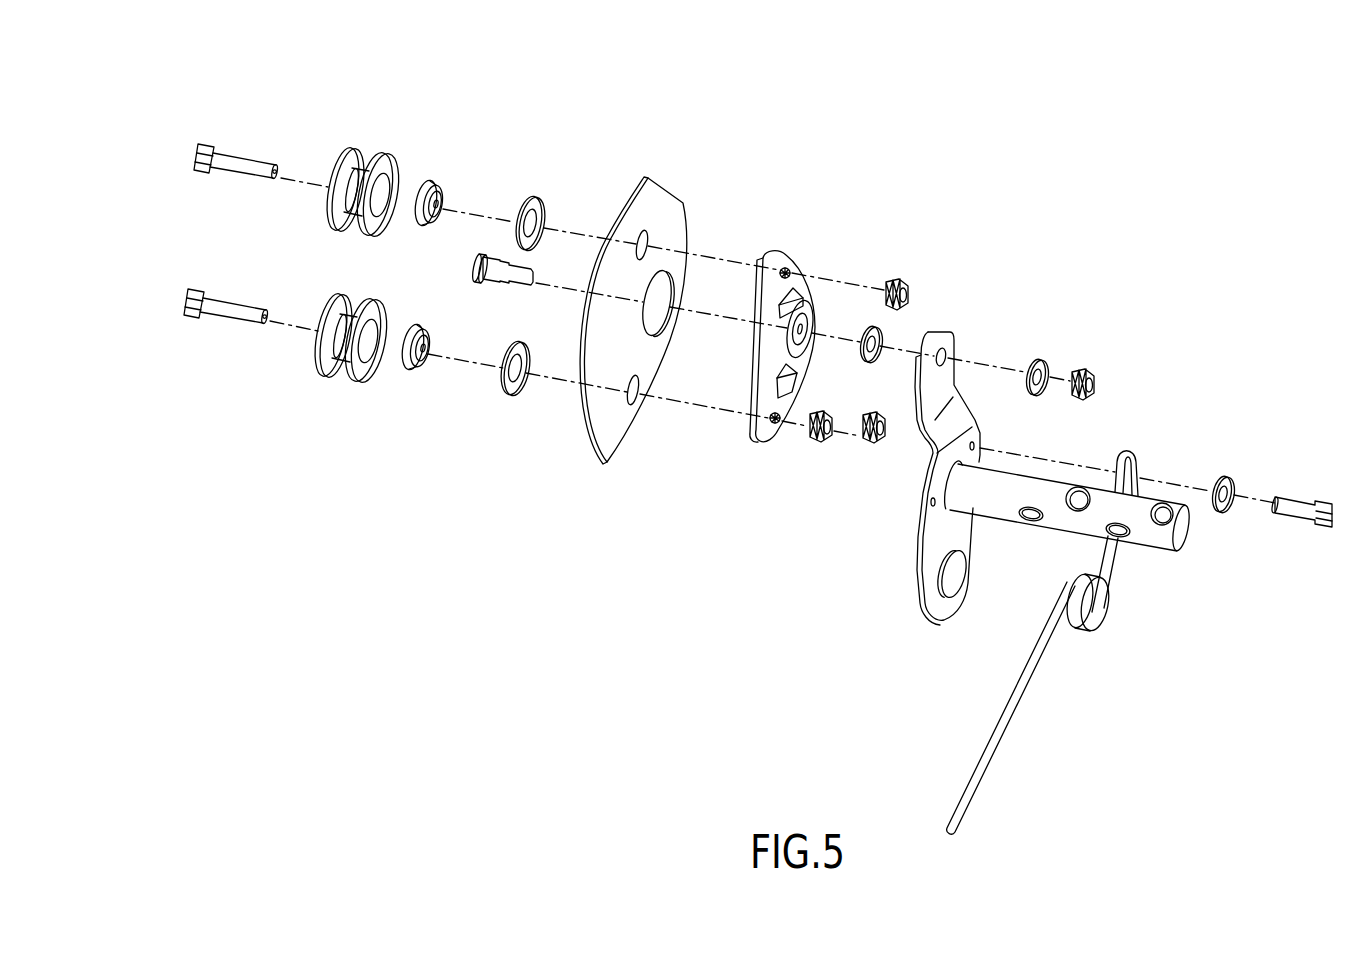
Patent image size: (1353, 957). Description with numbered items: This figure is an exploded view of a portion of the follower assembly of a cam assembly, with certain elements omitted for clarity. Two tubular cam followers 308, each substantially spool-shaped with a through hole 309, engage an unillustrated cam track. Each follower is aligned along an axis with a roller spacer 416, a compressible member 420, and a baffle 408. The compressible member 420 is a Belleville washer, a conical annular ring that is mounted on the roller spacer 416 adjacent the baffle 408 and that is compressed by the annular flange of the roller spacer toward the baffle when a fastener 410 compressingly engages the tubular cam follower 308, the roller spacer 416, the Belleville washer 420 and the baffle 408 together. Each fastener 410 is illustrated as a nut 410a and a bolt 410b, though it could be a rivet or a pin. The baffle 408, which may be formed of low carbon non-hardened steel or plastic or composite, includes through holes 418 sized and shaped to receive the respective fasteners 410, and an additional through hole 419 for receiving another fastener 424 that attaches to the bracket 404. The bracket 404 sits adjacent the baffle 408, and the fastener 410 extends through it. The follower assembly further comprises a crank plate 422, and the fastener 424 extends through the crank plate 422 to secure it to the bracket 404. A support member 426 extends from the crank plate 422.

The tubular cam follower 308 is at (378, 152).
The through hole 309 is at (377, 197).
The bracket 404 is at (797, 262).
The baffle 408 is at (666, 195).
The fastener 410 is at (196, 127).
The nut 410a is at (900, 278).
The bolt 410b is at (229, 158).
The roller spacer 416 is at (428, 183).
The through holes 418 is at (647, 245).
The additional through hole 419 is at (651, 316).
The compressible member 420 is at (532, 196).
The crank plate 422 is at (920, 567).
The fastener 424 is at (493, 284).
The support member 426 is at (1163, 542).